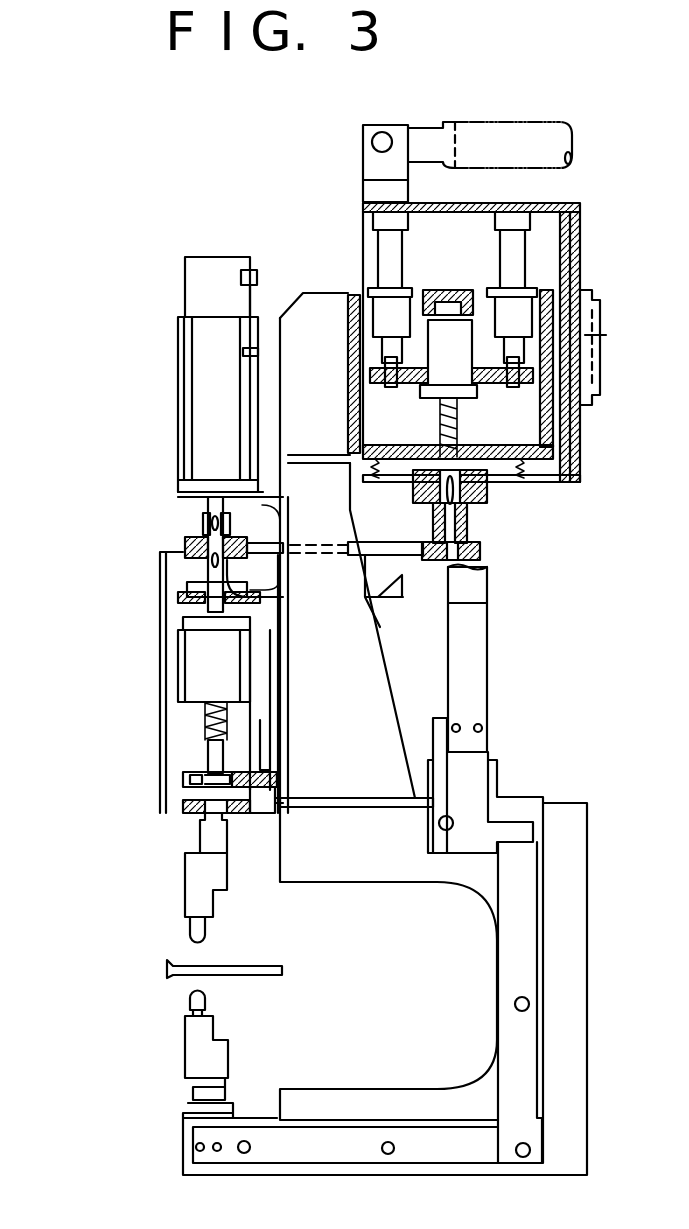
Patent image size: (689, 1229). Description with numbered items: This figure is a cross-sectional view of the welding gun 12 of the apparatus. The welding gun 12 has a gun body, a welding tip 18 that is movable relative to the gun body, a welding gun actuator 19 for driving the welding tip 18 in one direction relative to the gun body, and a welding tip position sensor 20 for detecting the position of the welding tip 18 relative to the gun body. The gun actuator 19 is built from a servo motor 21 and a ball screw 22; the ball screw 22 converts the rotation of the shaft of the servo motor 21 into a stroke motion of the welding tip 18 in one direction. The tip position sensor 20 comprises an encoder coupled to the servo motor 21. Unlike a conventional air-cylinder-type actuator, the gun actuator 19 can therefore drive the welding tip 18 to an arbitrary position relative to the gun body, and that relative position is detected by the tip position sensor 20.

The welding gun 12 is at (206, 485).
The welding tip position sensor 20 is at (195, 287).
The welding gun actuator 19 is at (205, 377).
The servo motor 21 is at (205, 412).
The ball screw 22 is at (205, 724).
The welding tip 18 is at (196, 932).